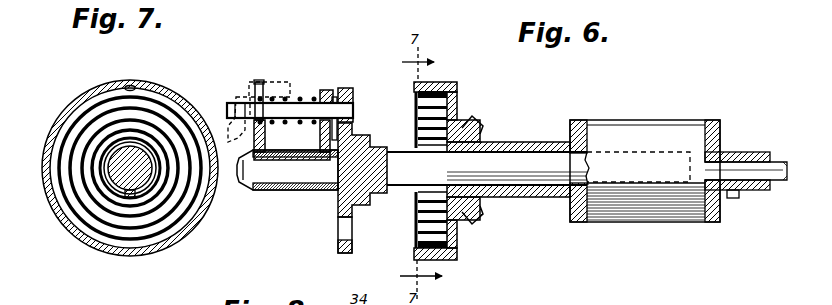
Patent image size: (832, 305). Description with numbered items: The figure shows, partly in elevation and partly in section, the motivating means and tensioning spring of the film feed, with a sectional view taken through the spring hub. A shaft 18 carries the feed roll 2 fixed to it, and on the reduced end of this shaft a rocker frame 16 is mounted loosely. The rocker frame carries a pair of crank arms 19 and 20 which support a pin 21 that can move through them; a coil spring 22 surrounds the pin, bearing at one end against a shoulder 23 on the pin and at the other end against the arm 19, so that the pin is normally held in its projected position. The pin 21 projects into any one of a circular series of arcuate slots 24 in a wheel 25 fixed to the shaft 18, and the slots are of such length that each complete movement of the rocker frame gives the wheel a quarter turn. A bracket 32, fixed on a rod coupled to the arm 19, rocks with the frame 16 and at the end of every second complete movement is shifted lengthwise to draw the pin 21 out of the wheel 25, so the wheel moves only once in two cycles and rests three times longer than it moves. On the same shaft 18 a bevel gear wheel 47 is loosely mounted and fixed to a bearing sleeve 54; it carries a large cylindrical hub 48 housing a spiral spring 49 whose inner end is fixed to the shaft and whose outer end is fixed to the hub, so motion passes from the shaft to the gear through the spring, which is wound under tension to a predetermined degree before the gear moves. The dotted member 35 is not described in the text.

In FIG. 6, the feed roll 2 is at (598, 127).
In FIG. 6, the rocker frame 16 is at (307, 192).
In FIG. 7, the shaft 18 is at (114, 162).
In FIG. 6, the shaft 18 is at (587, 175).
In FIG. 6, the crank arm 19 is at (256, 82).
In FIG. 6, the crank arm 20 is at (327, 89).
In FIG. 6, the pin 21 is at (344, 88).
In FIG. 6, the coil spring 22 is at (295, 128).
In FIG. 6, the shoulder 23 is at (294, 101).
In FIG. 6, the slots 24 is at (338, 233).
In FIG. 6, the wheel 25 is at (358, 128).
In FIG. 6, the bracket 32 is at (282, 82).
In FIG. 6, the lever (dashed) 35 is at (240, 100).
In FIG. 6, the bevel gear wheel 47 is at (480, 126).
In FIG. 7, the cylindrical hub 48 is at (160, 86).
In FIG. 6, the cylindrical hub 48 is at (457, 104).
In FIG. 7, the spiral spring 49 is at (70, 199).
In FIG. 6, the spiral spring 49 is at (418, 92).
In FIG. 6, the bearing sleeve 54 is at (536, 142).